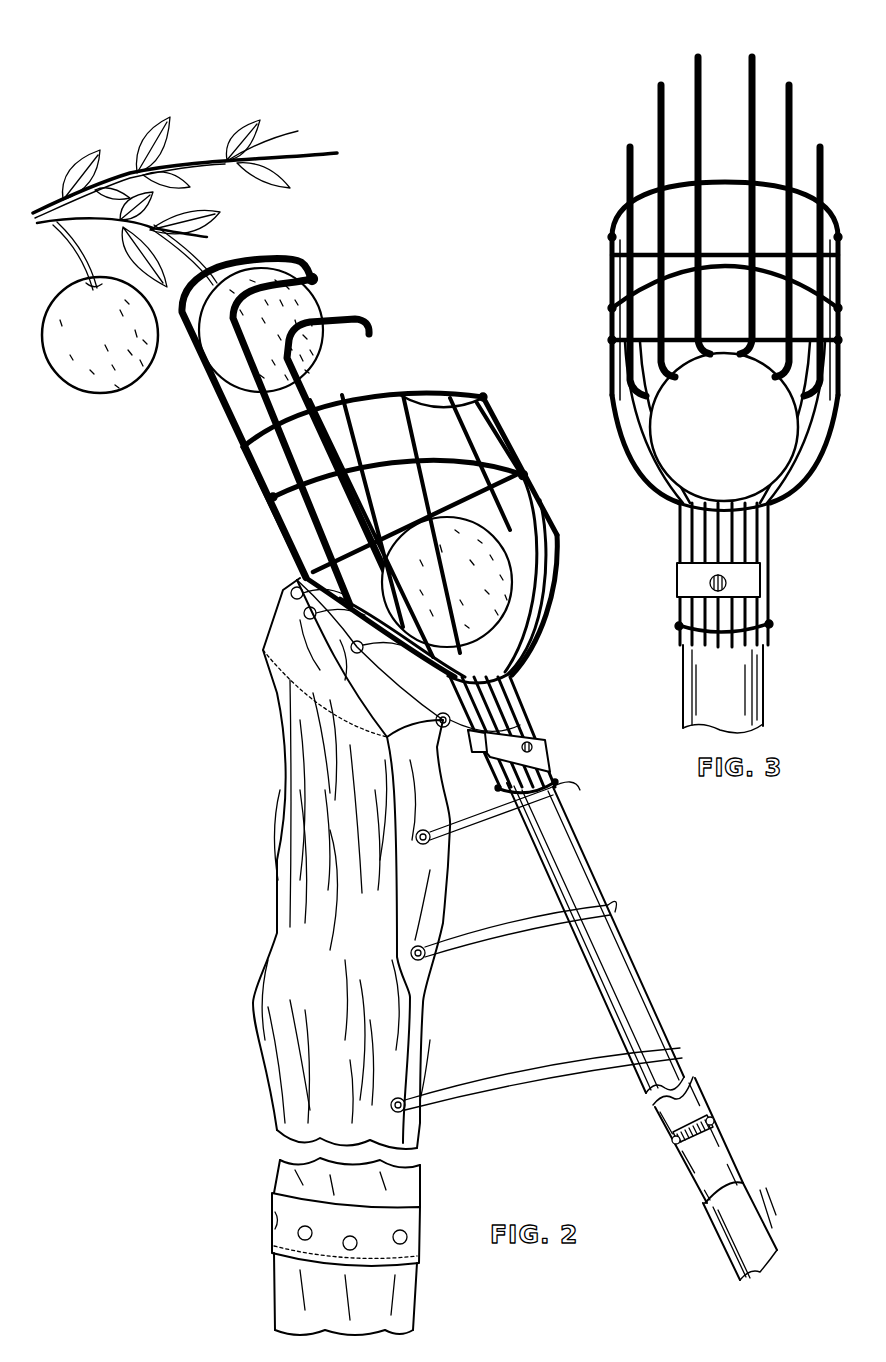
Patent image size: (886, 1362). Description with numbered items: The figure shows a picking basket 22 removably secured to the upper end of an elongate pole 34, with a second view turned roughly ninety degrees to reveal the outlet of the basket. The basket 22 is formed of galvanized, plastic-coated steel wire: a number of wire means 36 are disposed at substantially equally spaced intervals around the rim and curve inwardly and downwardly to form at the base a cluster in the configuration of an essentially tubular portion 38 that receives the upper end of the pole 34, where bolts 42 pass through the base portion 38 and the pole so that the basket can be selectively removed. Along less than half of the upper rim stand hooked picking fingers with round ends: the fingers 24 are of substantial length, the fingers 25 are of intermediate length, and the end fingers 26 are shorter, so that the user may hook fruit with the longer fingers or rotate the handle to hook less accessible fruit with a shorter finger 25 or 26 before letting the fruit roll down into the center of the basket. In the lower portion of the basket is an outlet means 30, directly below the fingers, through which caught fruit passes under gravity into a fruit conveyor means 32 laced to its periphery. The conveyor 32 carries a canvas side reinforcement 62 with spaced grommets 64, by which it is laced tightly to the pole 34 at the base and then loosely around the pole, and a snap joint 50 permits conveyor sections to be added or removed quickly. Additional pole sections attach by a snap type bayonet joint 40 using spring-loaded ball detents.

In FIG. 2, the picking basket 22 is at (479, 769).
In FIG. 2, the fingers 24 is at (293, 257).
In FIG. 3, the fingers 24 is at (752, 58).
In FIG. 2, the fingers 25 is at (318, 278).
In FIG. 3, the fingers 25 is at (793, 98).
In FIG. 2, the end fingers 26 is at (370, 333).
In FIG. 3, the end fingers 26 is at (825, 165).
In FIG. 2, the outlet means 30 is at (308, 576).
In FIG. 3, the outlet means 30 is at (795, 463).
In FIG. 2, the fruit conveyor means 32 is at (440, 956).
In FIG. 2, the pole 34 is at (642, 1031).
In FIG. 2, the wire means 36 is at (396, 535).
In FIG. 2, the tubular portion 38 is at (534, 728).
In FIG. 2, the snap type bayonet joint 40 is at (712, 1120).
In FIG. 3, the bolts 42 is at (702, 586).
In FIG. 2, the joint 50 is at (270, 1216).
In FIG. 2, the side reinforcement 62 is at (428, 1027).
In FIG. 2, the grommets 64 is at (456, 908).